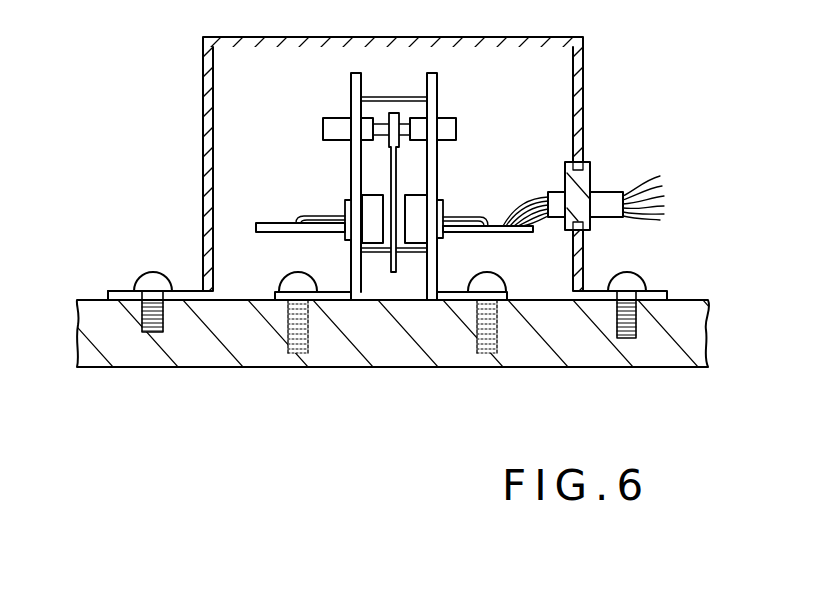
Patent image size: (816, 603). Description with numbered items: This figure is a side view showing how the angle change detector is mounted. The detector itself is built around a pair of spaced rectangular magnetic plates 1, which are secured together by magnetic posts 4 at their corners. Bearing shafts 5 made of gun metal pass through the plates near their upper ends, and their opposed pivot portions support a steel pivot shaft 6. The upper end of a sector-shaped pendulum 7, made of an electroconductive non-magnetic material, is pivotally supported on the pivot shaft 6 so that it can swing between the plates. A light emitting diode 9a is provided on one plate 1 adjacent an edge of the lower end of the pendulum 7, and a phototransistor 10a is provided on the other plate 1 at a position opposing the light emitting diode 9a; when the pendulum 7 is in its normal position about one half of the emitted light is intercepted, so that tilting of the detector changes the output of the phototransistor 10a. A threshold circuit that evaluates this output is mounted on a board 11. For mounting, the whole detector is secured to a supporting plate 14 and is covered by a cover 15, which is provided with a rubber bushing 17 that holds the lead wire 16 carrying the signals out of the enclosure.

The magnetic plate 1 is at (437, 165).
The magnetic post 4 is at (410, 97).
The bearing shaft 5 is at (323, 130).
The pivot shaft 6 is at (383, 122).
The pendulum 7 is at (393, 113).
The light emitting diode 9a is at (345, 210).
The phototransistor 10a is at (443, 205).
The board 11 is at (285, 233).
The supporting plate 14 is at (510, 368).
The cover 15 is at (584, 86).
The lead wire 16 is at (605, 192).
The rubber bushing 17 is at (589, 164).